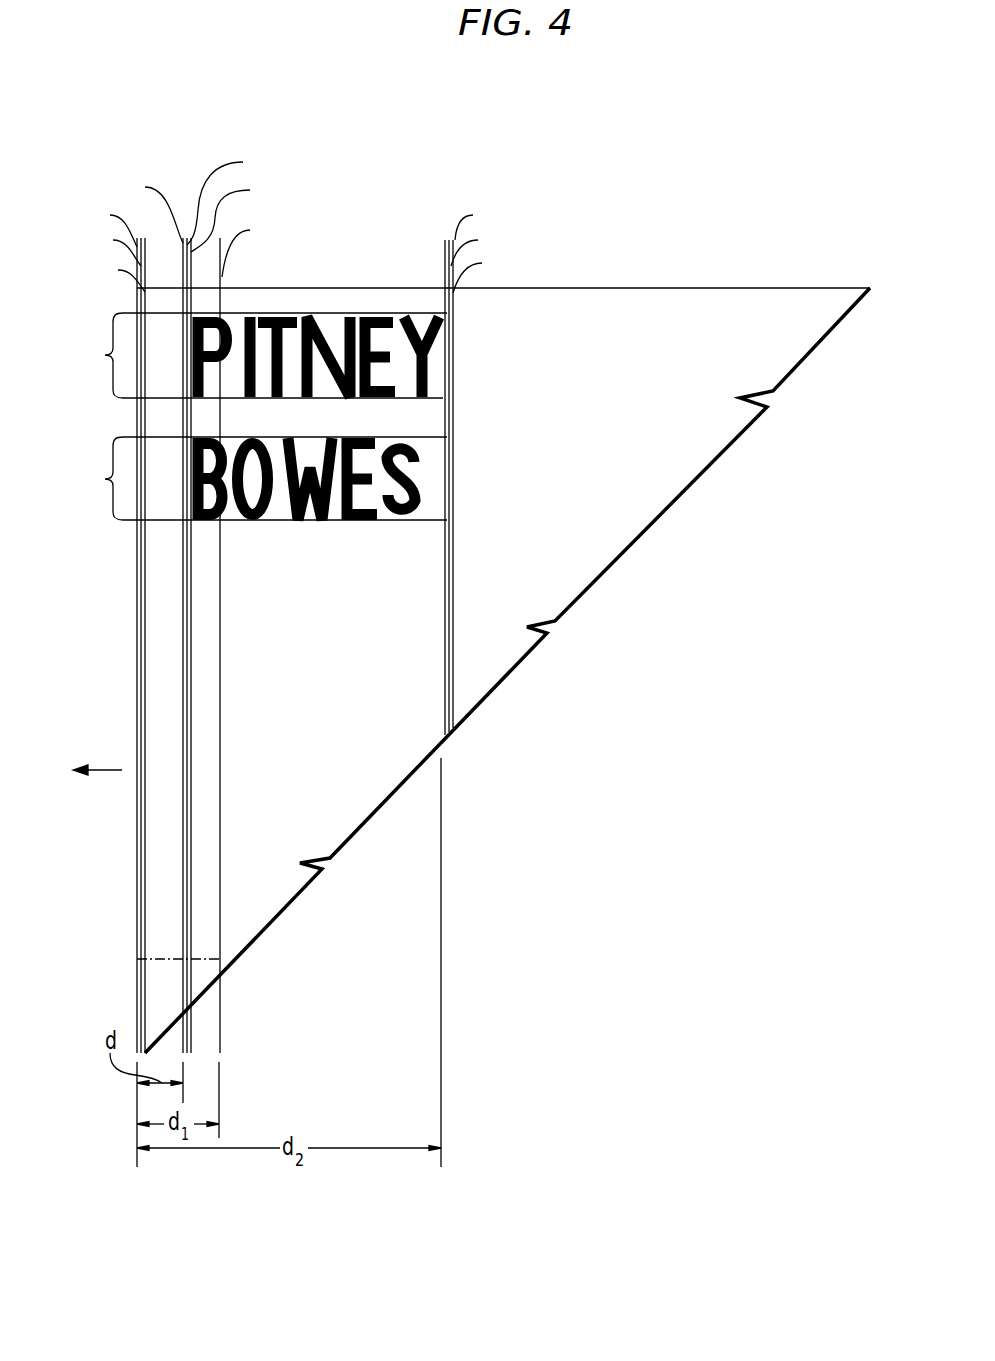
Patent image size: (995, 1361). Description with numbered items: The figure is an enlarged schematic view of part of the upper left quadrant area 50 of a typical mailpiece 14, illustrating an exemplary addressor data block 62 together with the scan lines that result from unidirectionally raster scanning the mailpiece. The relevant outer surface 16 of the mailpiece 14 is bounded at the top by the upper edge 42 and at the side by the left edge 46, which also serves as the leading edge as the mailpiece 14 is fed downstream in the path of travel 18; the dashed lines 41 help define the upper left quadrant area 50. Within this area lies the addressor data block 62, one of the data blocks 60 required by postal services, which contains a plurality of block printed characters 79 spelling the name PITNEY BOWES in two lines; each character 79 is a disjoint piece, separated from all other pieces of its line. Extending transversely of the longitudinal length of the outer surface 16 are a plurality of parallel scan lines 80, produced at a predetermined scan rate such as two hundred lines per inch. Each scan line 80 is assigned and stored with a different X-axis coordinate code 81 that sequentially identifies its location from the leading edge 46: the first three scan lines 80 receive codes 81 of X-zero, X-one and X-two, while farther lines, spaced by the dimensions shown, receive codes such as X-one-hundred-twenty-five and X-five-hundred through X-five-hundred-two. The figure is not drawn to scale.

The mailpiece 14 is at (503, 635).
The outer surface 16 is at (800, 333).
The path of travel 18 is at (100, 772).
The dashed lines 41 is at (157, 958).
The upper edge 42 is at (778, 287).
The left edge 46 is at (137, 740).
The upper left quadrant area 50 is at (409, 660).
The data blocks 60 is at (380, 430).
The addressor data block 62 is at (387, 399).
The block printed characters 79 is at (418, 313).
The scan lines 80 is at (299, 645).
The X-axis coordinate code 81 is at (319, 573).